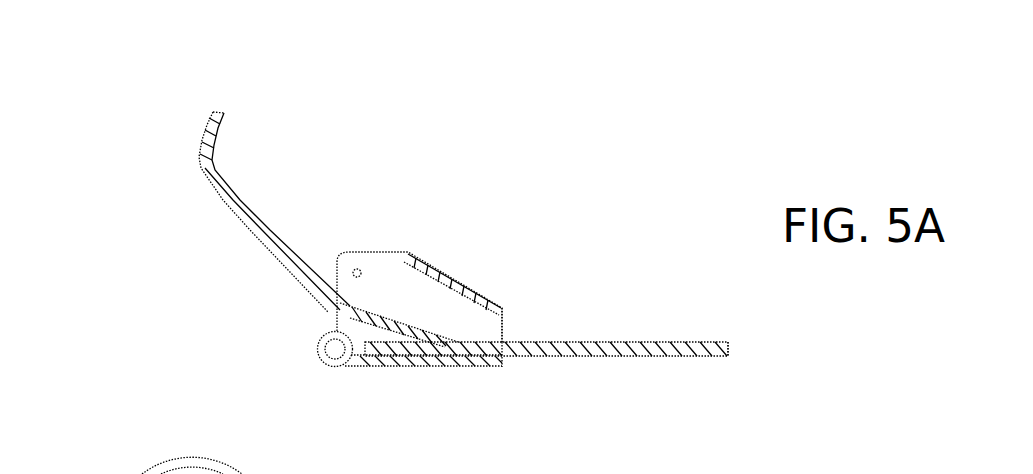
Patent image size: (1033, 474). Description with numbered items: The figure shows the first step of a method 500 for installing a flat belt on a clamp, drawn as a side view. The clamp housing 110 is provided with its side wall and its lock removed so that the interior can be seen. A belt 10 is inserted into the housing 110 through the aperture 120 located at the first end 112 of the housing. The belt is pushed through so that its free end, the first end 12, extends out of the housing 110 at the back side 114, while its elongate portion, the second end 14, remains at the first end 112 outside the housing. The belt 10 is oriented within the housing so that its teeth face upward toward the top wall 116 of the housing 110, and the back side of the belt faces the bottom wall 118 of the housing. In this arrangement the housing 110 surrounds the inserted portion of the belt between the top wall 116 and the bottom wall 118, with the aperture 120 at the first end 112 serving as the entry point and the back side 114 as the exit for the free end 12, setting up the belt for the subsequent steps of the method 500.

The method 500 is at (163, 96).
The belt 10 is at (622, 342).
The first end 12 is at (216, 110).
The second end 14 is at (728, 348).
The clamp housing 110 is at (467, 277).
The first end 112 is at (502, 358).
The back side 114 is at (337, 322).
The top wall 116 is at (430, 258).
The bottom wall 118 is at (430, 365).
The aperture 120 is at (507, 303).